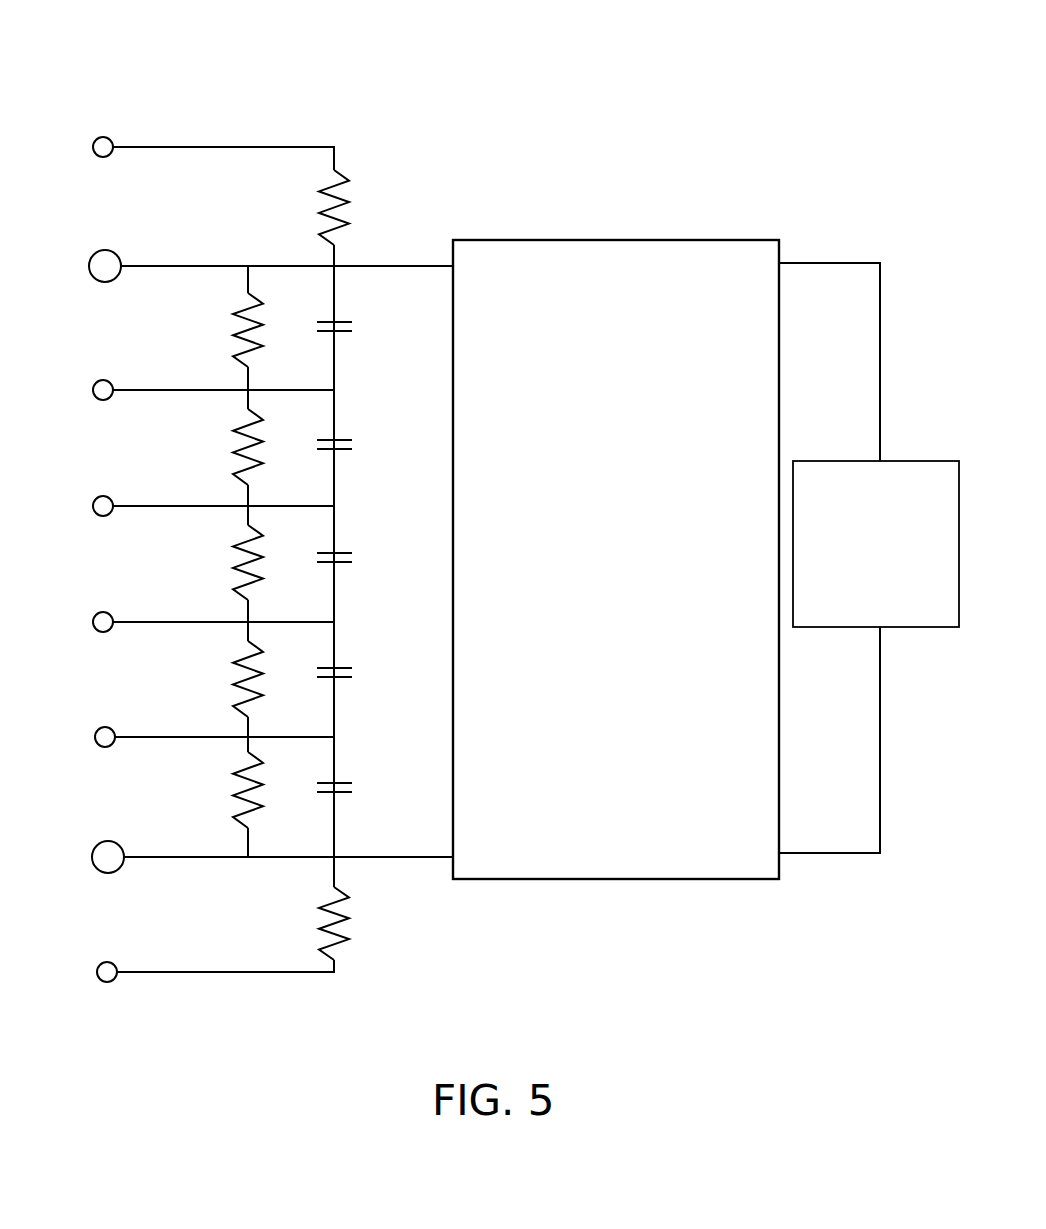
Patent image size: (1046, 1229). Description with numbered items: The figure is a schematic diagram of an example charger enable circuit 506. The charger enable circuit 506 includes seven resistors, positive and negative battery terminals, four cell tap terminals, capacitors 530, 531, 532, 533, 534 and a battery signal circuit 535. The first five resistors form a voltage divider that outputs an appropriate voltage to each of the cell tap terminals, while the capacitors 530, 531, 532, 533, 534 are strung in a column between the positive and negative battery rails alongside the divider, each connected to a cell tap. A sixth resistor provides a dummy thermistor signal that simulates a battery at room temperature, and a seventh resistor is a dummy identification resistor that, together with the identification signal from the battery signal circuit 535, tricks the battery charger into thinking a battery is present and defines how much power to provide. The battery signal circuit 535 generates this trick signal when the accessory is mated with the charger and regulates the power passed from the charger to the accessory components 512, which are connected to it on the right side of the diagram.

The charger enable circuit 506 is at (458, 92).
The accessory components 512 is at (808, 463).
The capacitor 530 is at (352, 324).
The capacitor 531 is at (352, 442).
The capacitor 532 is at (352, 555).
The capacitor 533 is at (352, 670).
The capacitor 534 is at (352, 785).
The battery signal circuit 535 is at (637, 253).